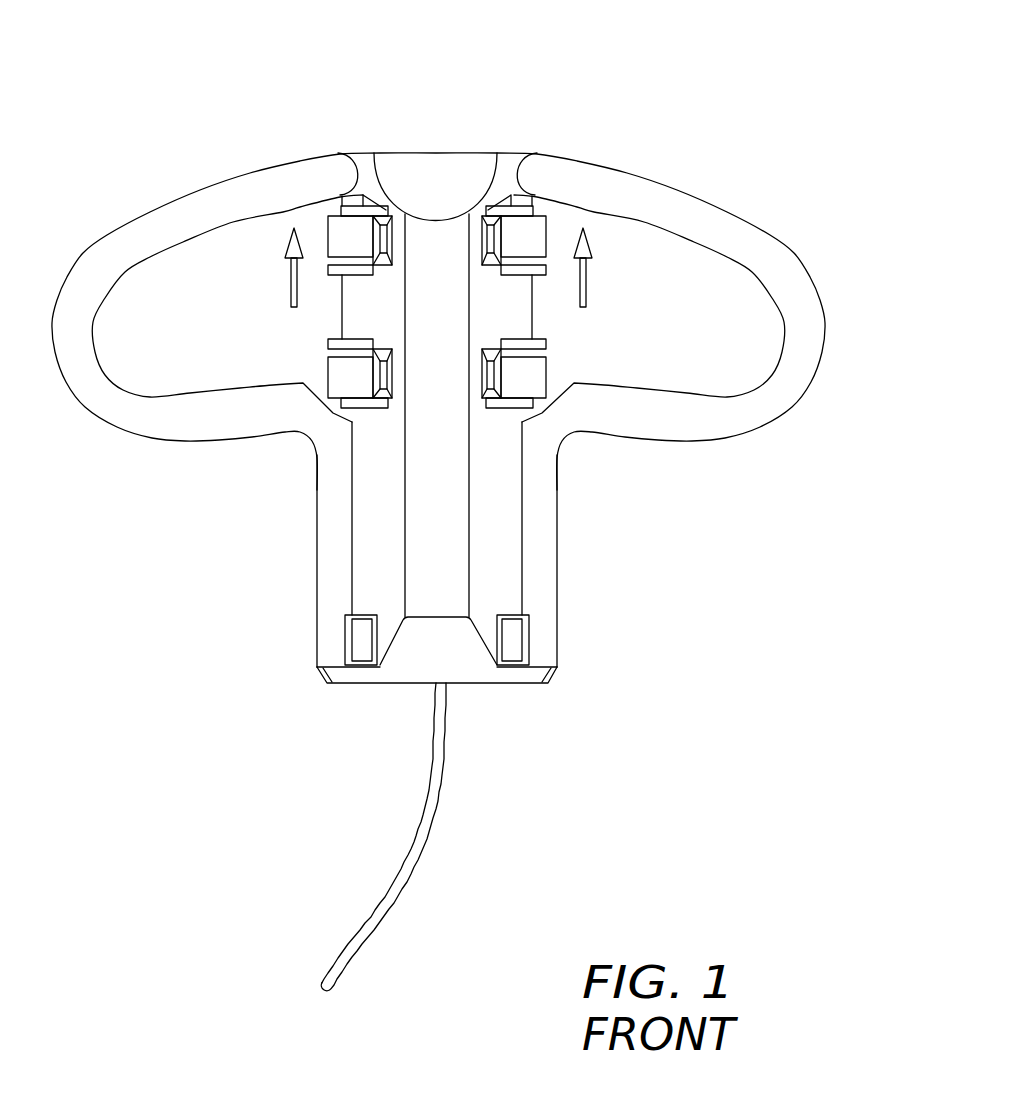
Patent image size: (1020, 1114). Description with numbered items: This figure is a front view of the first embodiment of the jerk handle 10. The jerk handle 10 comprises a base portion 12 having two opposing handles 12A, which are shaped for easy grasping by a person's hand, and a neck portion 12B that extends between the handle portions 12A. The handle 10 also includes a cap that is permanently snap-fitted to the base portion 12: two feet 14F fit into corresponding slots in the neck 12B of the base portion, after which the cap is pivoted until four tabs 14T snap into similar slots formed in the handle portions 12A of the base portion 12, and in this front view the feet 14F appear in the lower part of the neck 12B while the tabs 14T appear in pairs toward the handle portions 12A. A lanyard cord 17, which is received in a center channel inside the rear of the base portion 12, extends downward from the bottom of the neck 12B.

The jerk handle 10 is at (160, 112).
The base portion 12 is at (740, 218).
The handle portions 12A is at (118, 430).
The neck portion 12B is at (558, 548).
The tabs 14T is at (388, 212).
The feet 14F is at (358, 633).
The lanyard cord 17 is at (438, 792).